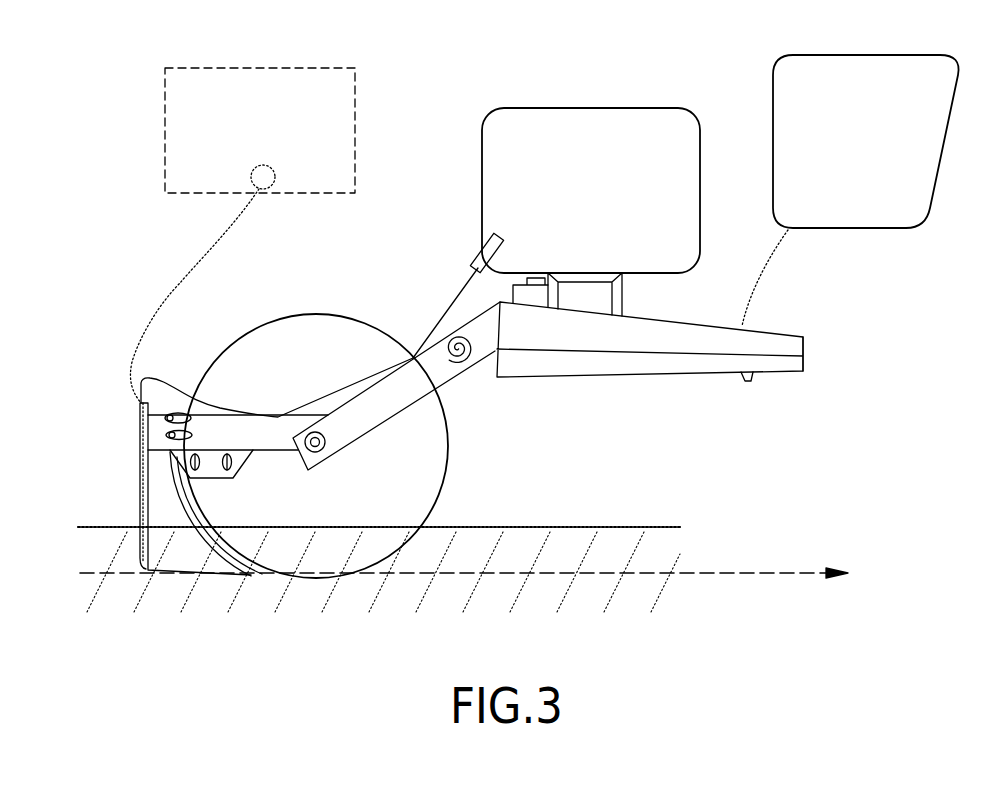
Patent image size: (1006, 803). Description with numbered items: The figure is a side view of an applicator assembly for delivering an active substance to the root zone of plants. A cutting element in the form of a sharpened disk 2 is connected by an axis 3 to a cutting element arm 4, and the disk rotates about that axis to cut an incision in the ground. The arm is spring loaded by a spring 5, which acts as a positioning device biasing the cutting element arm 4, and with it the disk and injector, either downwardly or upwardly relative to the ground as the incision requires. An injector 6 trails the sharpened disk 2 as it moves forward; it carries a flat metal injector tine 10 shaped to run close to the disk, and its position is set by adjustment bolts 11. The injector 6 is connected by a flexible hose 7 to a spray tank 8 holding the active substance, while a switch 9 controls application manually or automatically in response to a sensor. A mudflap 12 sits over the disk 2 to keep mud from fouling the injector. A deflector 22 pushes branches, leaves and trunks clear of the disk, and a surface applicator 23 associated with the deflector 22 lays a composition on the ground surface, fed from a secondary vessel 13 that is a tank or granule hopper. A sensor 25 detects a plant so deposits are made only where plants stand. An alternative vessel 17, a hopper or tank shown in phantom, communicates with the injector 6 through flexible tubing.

The sharpened disk 2 is at (417, 498).
The axis 3 is at (314, 432).
The cutting element arm 4 is at (424, 373).
The spring 5 is at (466, 357).
The injector 6 is at (142, 518).
The flexible hose 7 is at (142, 381).
The spray tank 8 is at (608, 128).
The switch 9 is at (480, 262).
The injector tine 10 is at (172, 548).
The adjustment bolts 11 is at (172, 424).
The mudflap 12 is at (212, 457).
The secondary vessel 13 is at (892, 205).
The alternative vessel 17 is at (340, 98).
The deflector 22 is at (673, 342).
The surface applicator 23 is at (747, 375).
The sensor 25 is at (783, 360).